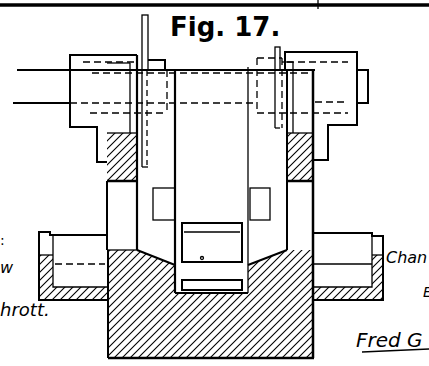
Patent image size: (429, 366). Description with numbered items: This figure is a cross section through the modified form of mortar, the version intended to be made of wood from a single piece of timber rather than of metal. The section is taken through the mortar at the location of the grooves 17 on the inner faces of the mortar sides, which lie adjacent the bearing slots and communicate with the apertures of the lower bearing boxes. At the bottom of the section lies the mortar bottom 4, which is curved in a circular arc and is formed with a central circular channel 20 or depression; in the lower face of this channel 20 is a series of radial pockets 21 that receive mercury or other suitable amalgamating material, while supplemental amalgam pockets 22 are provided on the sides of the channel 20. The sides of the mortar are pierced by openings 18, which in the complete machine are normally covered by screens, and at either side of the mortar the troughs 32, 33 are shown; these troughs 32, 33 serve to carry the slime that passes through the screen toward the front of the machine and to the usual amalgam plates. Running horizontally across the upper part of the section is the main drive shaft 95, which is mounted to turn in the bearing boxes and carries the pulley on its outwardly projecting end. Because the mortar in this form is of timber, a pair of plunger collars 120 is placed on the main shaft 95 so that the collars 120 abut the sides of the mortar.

The mortar bottom 4 is at (230, 322).
The grooves 17 is at (319, 90).
The openings 18 is at (110, 195).
The central circular channel 20 is at (233, 270).
The radial pockets 21 is at (212, 242).
The supplemental amalgam pockets 22 is at (257, 198).
The trough 32 is at (62, 243).
The trough 33 is at (347, 241).
The main drive shaft 95 is at (369, 80).
The plunger collars 120 is at (142, 31).